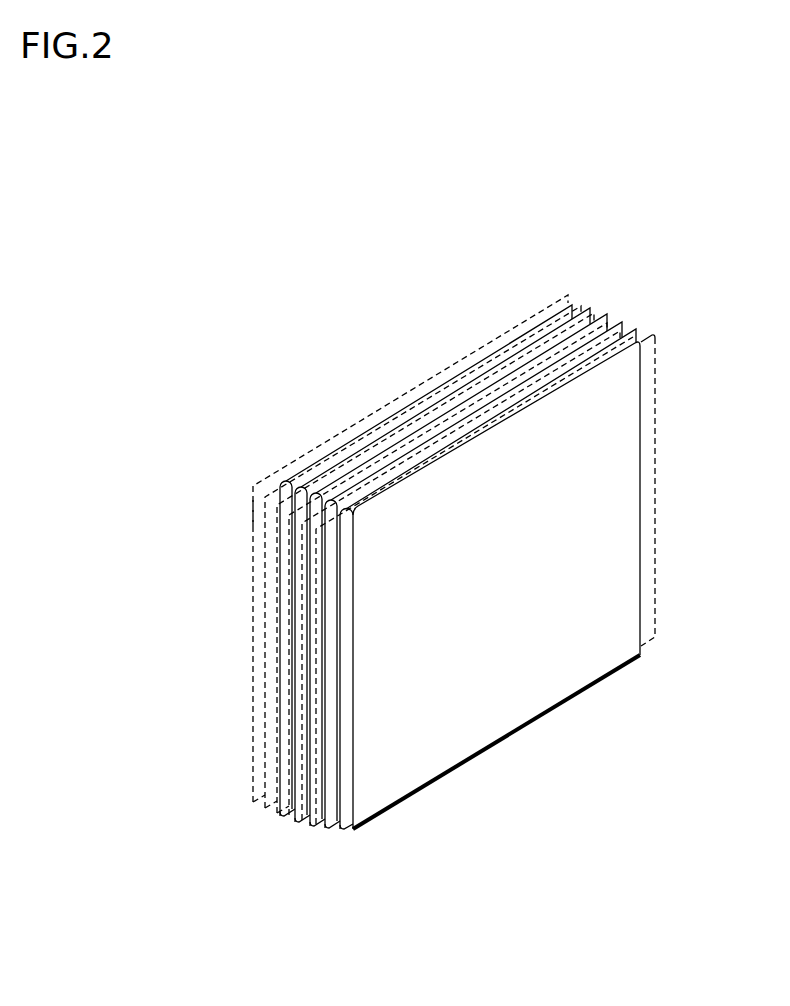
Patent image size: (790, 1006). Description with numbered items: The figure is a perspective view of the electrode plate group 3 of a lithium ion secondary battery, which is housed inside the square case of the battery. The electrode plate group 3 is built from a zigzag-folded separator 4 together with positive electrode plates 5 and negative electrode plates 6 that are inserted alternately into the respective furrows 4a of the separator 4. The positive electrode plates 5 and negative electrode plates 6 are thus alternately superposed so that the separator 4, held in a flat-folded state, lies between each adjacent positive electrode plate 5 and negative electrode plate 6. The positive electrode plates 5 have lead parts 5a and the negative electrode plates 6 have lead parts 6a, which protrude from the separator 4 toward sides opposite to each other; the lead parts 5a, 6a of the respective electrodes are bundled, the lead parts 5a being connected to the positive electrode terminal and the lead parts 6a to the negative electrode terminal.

The electrode plate group 3 is at (412, 243).
The separator 4 is at (598, 665).
The furrows 4a is at (346, 771).
The positive electrode plates 5 is at (352, 463).
The lead parts 5a is at (279, 521).
The negative electrode plates 6 is at (573, 306).
The lead parts 6a is at (657, 383).